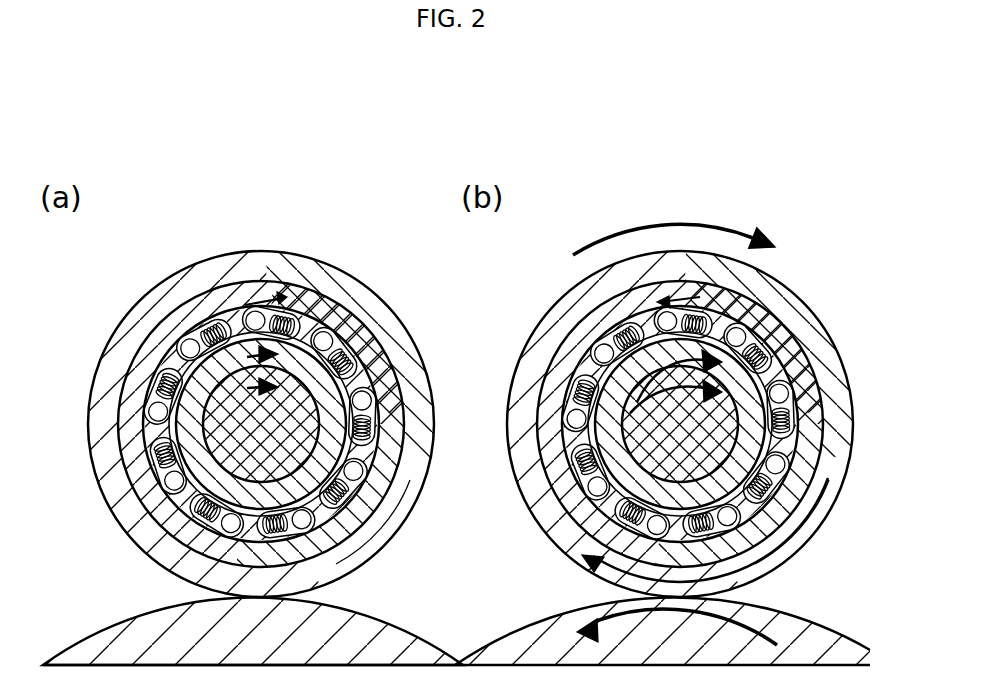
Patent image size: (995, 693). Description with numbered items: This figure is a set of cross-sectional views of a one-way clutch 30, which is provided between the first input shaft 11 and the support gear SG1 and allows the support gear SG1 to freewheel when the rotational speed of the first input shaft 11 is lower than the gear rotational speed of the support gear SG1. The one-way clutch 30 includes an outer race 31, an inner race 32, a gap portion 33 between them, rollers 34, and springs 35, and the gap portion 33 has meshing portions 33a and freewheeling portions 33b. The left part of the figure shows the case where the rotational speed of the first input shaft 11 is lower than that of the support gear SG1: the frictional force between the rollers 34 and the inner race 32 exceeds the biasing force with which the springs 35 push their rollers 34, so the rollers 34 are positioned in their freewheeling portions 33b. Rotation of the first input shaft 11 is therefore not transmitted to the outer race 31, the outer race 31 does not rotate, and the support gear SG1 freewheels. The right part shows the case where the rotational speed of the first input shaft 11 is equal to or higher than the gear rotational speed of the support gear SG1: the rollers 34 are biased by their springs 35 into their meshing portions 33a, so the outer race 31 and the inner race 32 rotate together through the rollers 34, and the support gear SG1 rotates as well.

The one-way clutch 30 is at (75, 285).
The outer race 31 is at (261, 296).
The inner race 32 is at (358, 300).
The gap portion 33 is at (185, 330).
The meshing portions 33a is at (134, 370).
The freewheeling portions 33b is at (205, 322).
The rollers 34 is at (188, 338).
The springs 35 is at (215, 318).
The first input shaft 11 is at (310, 372).
The support gear SG1 is at (293, 262).